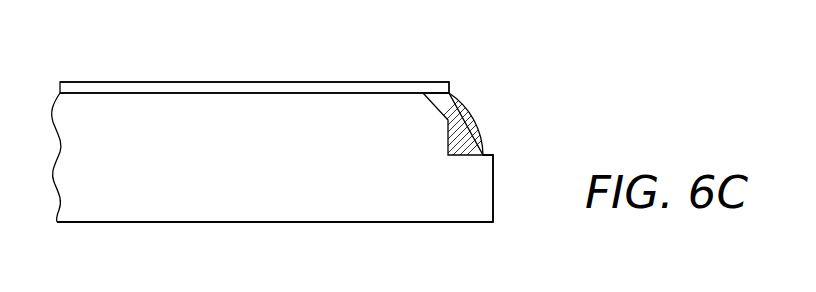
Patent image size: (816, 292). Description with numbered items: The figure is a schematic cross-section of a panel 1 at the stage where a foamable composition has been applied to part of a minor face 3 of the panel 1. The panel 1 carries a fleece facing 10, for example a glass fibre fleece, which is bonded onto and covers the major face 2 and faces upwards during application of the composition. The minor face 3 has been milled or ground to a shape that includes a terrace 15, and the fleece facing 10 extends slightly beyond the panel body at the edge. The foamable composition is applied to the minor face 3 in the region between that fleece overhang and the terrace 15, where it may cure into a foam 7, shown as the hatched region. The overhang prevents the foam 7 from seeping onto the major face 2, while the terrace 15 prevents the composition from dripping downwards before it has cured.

The panel 1 is at (158, 58).
The major face 2 is at (397, 90).
The minor face 3 is at (513, 92).
The polymeric foam layer 7 is at (461, 112).
The fleece facing 10 is at (300, 90).
The terrace 15 is at (487, 152).